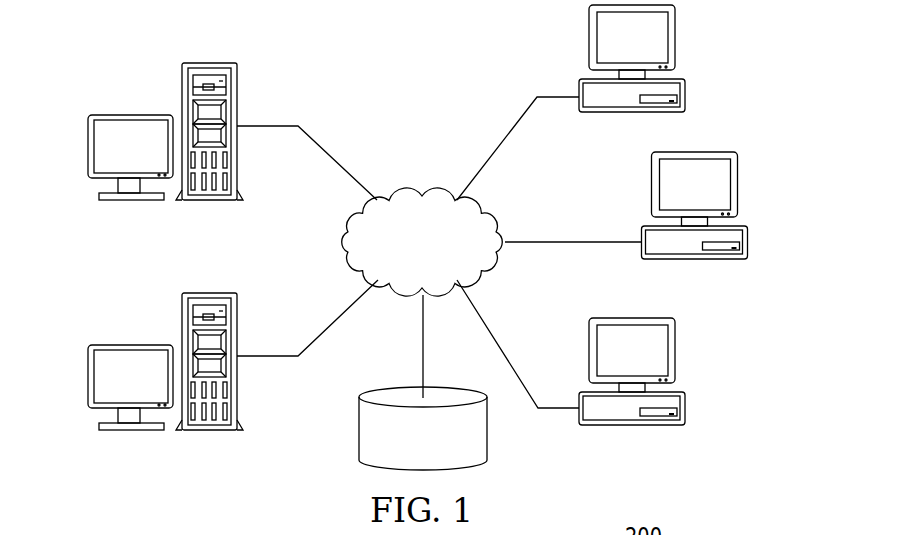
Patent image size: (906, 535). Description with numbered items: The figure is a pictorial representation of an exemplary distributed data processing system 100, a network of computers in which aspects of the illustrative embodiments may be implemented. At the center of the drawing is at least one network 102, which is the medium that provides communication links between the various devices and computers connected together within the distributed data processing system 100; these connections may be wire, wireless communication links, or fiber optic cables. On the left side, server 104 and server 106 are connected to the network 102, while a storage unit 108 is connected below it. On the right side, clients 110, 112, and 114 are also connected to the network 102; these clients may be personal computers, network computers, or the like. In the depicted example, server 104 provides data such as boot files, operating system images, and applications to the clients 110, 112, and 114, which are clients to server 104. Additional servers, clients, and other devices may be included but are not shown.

The distributed data processing system 100 is at (300, 59).
The network 102 is at (402, 192).
The server 104 is at (88, 147).
The server 106 is at (88, 377).
The storage unit 108 is at (360, 430).
The client 110 is at (687, 88).
The client 112 is at (748, 250).
The client 114 is at (685, 415).